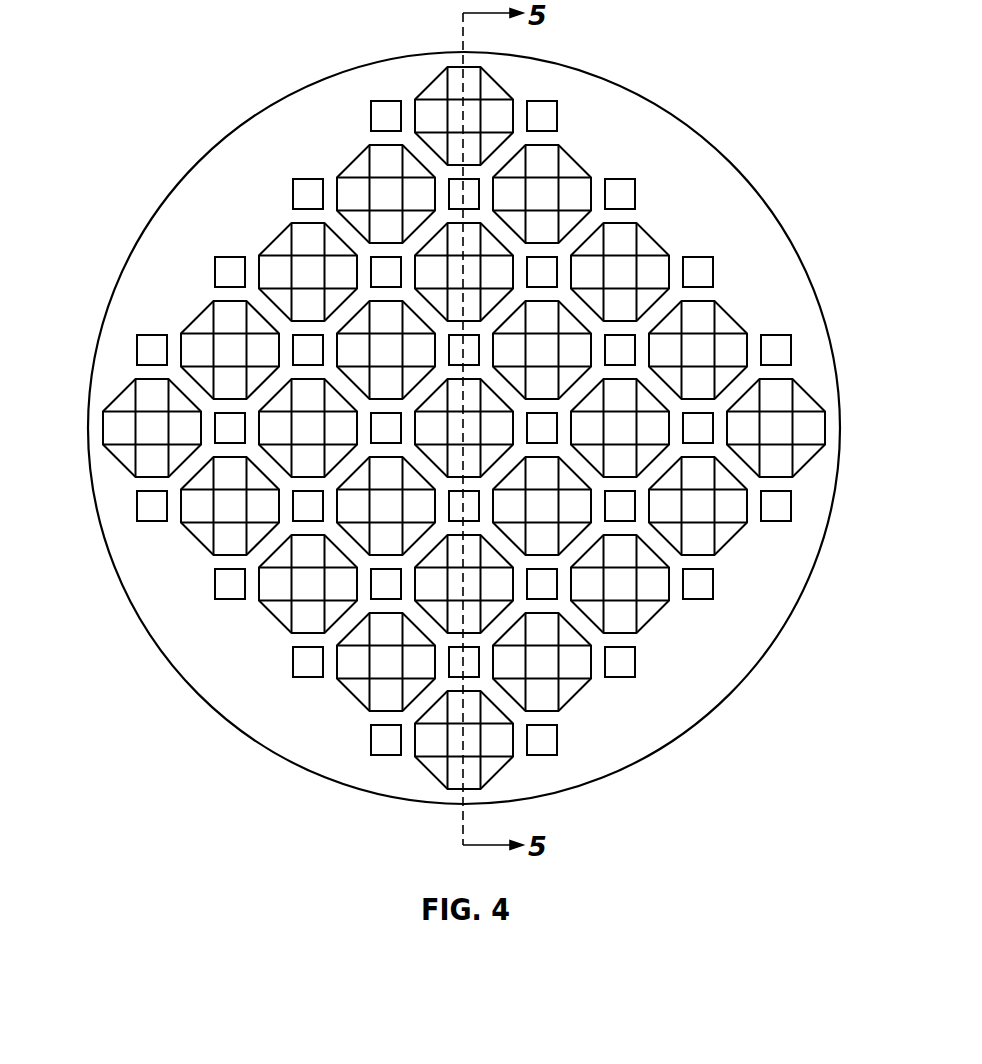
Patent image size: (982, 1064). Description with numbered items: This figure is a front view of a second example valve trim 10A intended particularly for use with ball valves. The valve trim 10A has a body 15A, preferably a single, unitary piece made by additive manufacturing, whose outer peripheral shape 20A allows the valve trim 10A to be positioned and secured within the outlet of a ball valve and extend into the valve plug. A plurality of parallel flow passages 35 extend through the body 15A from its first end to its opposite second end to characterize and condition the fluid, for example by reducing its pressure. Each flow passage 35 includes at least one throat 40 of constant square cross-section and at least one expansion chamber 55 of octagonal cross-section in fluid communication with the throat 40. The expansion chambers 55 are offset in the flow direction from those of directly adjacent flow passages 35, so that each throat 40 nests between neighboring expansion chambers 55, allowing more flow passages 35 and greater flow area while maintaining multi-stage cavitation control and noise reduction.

The valve trim 10A is at (253, 78).
The body 15A is at (713, 202).
The outer peripheral shape 20A is at (145, 223).
The flow passages 35 is at (148, 332).
The throat 40 is at (230, 273).
The expansion chamber 55 is at (120, 463).